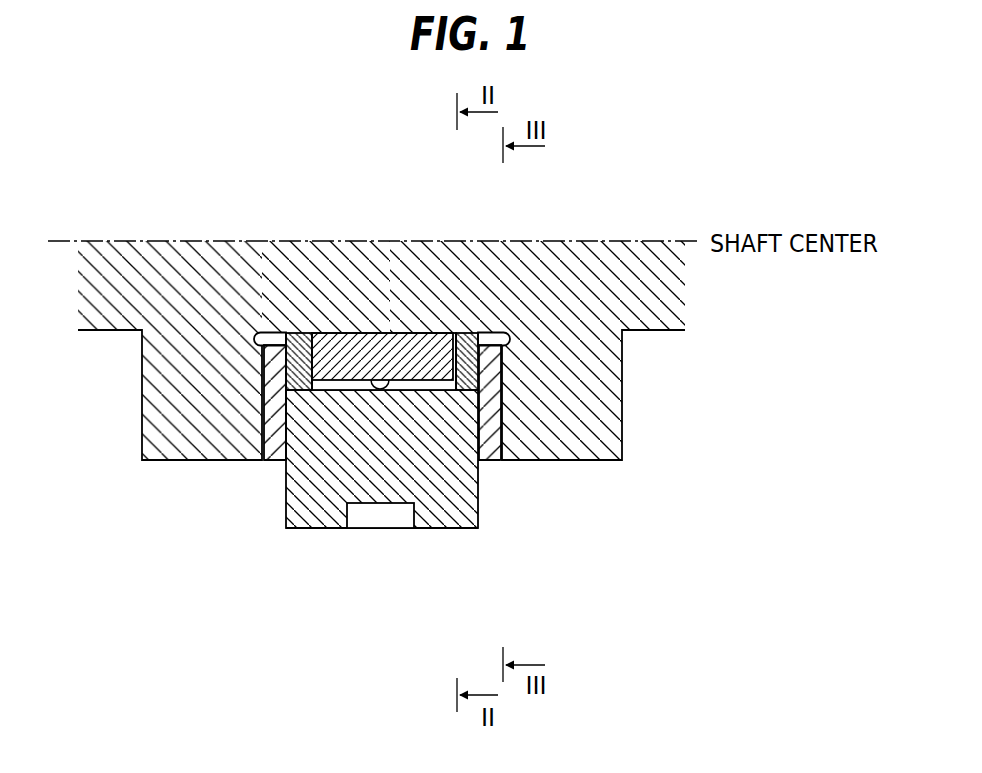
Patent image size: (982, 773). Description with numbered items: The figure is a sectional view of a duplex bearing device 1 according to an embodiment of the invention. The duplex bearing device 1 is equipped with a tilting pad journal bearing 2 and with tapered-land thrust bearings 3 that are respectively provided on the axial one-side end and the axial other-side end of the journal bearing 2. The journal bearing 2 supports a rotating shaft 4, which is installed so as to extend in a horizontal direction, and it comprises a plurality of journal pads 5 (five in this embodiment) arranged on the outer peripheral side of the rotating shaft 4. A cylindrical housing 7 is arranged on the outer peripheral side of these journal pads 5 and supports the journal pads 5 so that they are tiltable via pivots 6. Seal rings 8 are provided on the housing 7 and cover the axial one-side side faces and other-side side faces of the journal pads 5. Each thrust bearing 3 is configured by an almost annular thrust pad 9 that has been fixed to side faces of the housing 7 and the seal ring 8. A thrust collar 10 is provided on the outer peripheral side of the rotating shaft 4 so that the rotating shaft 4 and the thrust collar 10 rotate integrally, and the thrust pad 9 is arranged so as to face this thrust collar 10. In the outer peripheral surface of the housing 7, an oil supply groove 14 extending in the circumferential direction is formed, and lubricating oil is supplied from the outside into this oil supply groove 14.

The duplex bearing device 1 is at (513, 601).
The tilting pad journal bearing 2 is at (317, 533).
The tapered-land thrust bearing 3 is at (272, 470).
The rotating shaft 4 is at (660, 333).
The journal pad 5 is at (352, 333).
The pivot 6 is at (391, 378).
The cylindrical housing 7 is at (448, 518).
The seal ring 8 is at (294, 333).
The thrust pad 9 is at (260, 332).
The thrust collar 10 is at (581, 462).
The oil supply groove 14 is at (381, 518).